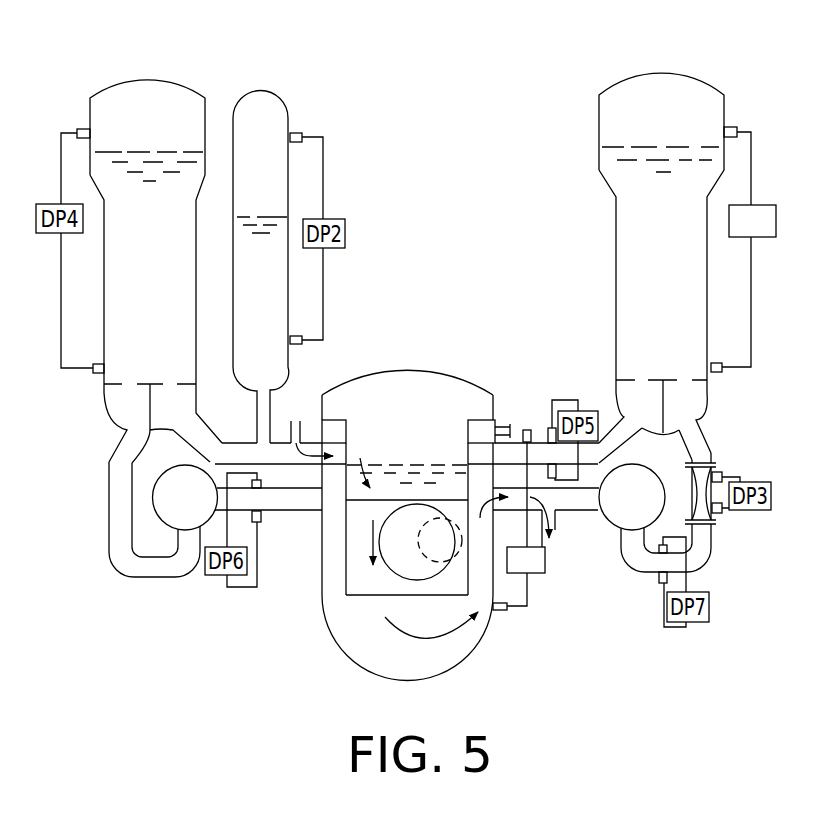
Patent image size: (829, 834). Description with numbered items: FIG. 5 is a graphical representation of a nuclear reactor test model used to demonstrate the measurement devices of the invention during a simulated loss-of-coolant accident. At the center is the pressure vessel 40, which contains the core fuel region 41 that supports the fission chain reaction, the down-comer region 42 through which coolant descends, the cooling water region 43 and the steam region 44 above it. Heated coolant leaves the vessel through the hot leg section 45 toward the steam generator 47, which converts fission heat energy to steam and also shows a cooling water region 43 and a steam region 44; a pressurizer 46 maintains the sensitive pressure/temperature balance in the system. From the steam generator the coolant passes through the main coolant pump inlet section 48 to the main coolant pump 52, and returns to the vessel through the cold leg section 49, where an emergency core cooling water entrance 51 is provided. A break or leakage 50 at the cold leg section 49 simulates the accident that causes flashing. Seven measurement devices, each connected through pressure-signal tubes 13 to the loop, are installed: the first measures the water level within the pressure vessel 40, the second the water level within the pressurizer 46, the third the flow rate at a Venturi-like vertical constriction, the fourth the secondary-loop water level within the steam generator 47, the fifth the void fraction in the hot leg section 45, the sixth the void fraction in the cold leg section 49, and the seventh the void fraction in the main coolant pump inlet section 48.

The pressure-signal tube 13 is at (727, 125).
The pressure vessel 40 is at (370, 372).
The core fuel region 41 is at (362, 568).
The down-comer region 42 is at (333, 550).
The cooling water region 43 is at (243, 230).
The steam region 44 is at (250, 113).
The hot leg section 45 is at (232, 438).
The pressurizer 46 is at (292, 105).
The steam generator 47 is at (115, 80).
The main coolant pump inlet section 48 is at (153, 580).
The cold leg section 49 is at (290, 513).
The break or leakage 50 is at (557, 545).
The emergency core cooling water entrance 51 is at (298, 418).
The main coolant pump 52 is at (167, 497).